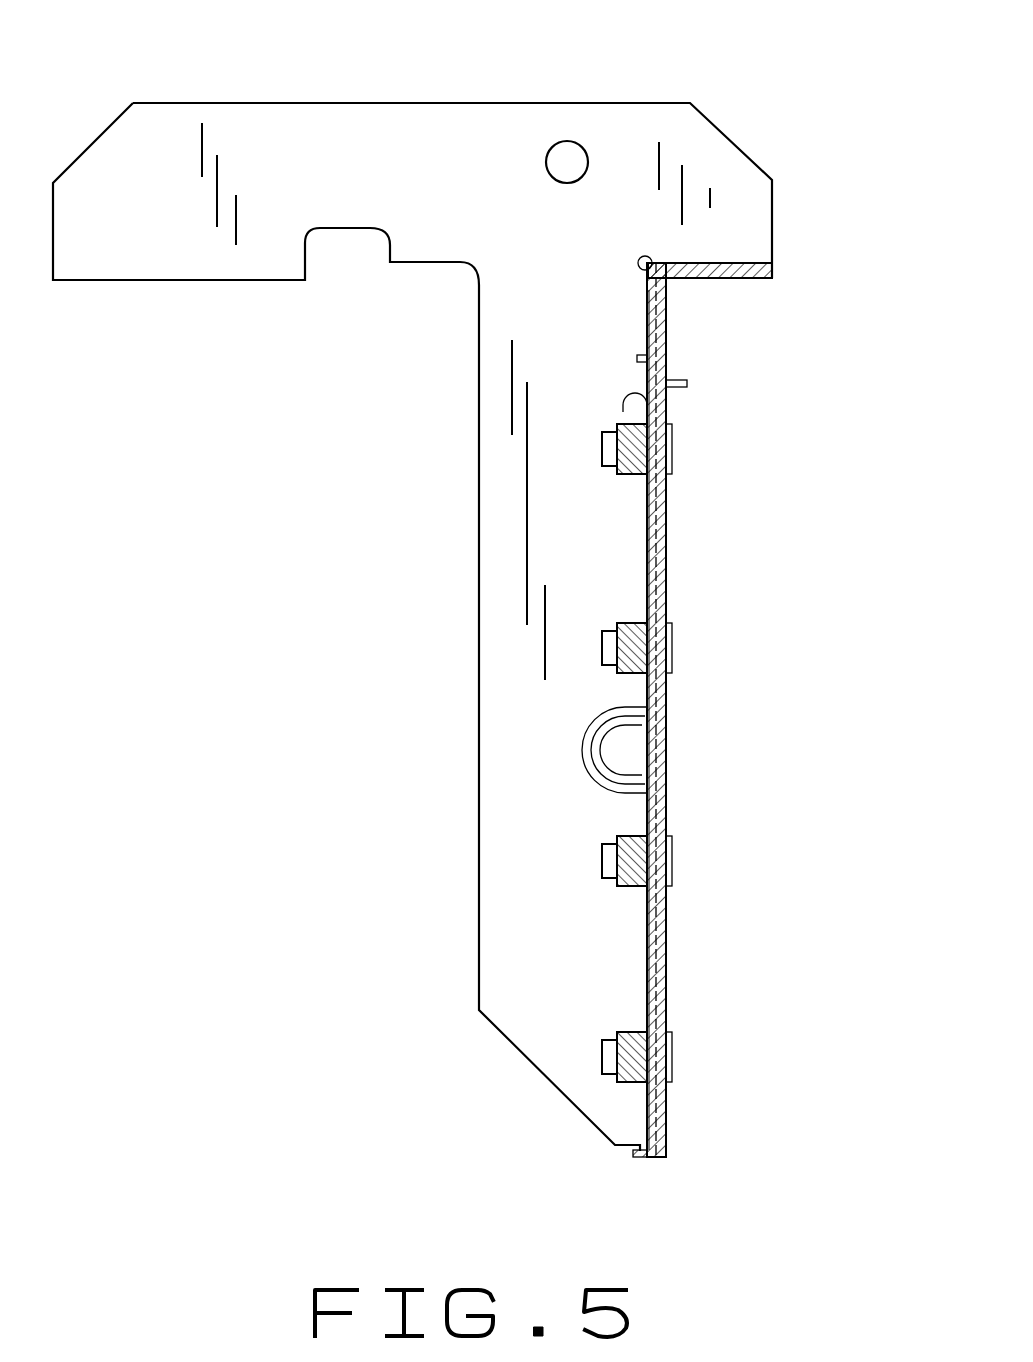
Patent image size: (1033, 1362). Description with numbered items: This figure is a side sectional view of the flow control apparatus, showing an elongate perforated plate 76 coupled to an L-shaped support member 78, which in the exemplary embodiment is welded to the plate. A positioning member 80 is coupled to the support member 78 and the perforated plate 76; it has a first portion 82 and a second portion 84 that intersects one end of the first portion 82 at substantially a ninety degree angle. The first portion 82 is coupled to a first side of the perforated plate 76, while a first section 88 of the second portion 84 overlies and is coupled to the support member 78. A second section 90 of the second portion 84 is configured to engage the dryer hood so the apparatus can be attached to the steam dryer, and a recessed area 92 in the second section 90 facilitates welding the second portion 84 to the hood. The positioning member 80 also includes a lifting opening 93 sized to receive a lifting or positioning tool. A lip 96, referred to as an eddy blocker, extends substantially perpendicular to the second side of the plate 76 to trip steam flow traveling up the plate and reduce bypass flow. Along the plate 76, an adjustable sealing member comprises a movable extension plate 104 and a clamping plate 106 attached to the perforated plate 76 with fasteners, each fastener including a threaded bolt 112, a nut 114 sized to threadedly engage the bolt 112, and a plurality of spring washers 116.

The perforated plate 76 is at (666, 533).
The support member 78 is at (688, 280).
The positioning member 80 is at (642, 103).
The first portion 82 is at (478, 358).
The second portion 84 is at (170, 103).
The first section 88 is at (713, 175).
The second section 90 is at (212, 237).
The recessed area 92 is at (347, 243).
The lifting opening 93 is at (570, 141).
The lip 96 is at (676, 383).
The extension plate 104 is at (648, 384).
The clamping plate 106 is at (647, 565).
The threaded bolt 112 is at (667, 447).
The nut 114 is at (603, 455).
The spring washer 116 is at (658, 488).